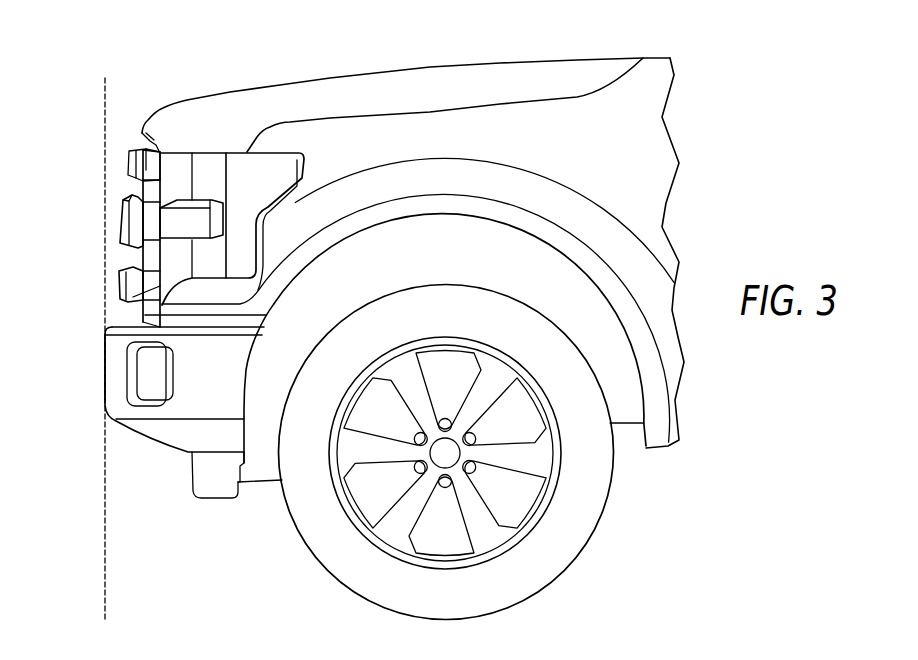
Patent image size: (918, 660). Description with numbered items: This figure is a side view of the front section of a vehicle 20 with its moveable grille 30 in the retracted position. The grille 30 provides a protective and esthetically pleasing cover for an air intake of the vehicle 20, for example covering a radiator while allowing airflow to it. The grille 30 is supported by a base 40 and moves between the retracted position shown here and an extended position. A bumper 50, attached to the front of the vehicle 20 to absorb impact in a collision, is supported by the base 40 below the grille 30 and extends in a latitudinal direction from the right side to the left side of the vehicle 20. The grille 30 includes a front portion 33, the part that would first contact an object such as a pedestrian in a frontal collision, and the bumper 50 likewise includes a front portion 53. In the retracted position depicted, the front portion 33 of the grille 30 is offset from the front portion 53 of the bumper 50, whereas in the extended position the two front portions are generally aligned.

The vehicle 20 is at (356, 73).
The grille 30 is at (120, 220).
The front portion of the grille 33 is at (118, 287).
The base 40 is at (175, 323).
The bumper 50 is at (184, 433).
The front portion of the bumper 53 is at (105, 337).